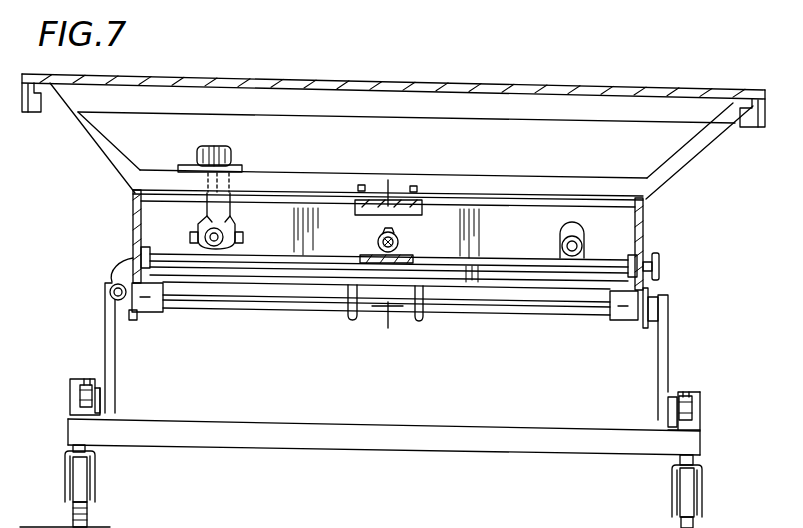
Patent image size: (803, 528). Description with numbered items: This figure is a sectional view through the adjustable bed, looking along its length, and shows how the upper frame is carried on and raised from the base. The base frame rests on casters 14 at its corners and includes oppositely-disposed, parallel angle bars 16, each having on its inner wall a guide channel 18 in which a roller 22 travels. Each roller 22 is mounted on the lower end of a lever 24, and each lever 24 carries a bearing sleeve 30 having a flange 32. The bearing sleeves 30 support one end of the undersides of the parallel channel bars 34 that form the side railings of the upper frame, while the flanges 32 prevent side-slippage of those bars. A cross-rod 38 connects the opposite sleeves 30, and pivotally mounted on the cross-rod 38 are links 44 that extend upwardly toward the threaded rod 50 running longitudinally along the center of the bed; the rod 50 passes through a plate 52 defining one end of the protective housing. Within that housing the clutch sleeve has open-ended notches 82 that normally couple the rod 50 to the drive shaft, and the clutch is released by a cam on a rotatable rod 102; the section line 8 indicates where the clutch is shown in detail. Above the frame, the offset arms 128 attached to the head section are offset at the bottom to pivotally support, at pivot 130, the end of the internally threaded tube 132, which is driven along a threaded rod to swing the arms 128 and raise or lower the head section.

The section line 8- 8 is at (355, 180).
The casters 14 is at (66, 487).
The angle bars 16 is at (68, 398).
The guide channel 18 is at (78, 378).
The roller 22 is at (87, 383).
The lever 24 is at (112, 388).
The bearing sleeve 30 is at (160, 312).
The flange 32 is at (132, 320).
The channel bars 34 is at (133, 224).
The cross-rod 38 is at (523, 310).
The links 44 is at (347, 304).
The threaded rod 50 is at (404, 249).
The plate 52 is at (488, 218).
The notches 82 is at (400, 236).
The rod 102 is at (539, 242).
The offset arms 128 is at (214, 194).
The pivot 130 is at (226, 241).
The tube 132 is at (243, 215).